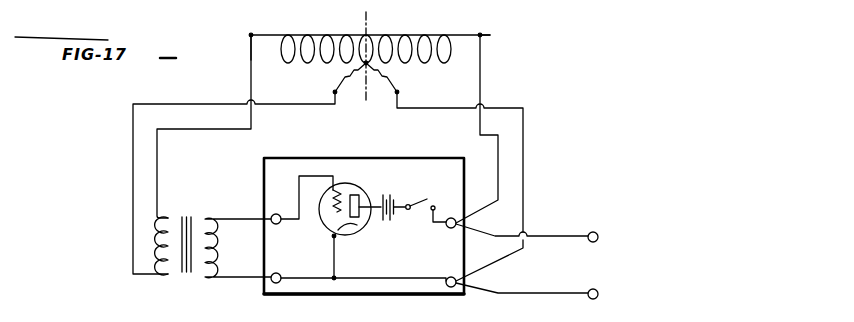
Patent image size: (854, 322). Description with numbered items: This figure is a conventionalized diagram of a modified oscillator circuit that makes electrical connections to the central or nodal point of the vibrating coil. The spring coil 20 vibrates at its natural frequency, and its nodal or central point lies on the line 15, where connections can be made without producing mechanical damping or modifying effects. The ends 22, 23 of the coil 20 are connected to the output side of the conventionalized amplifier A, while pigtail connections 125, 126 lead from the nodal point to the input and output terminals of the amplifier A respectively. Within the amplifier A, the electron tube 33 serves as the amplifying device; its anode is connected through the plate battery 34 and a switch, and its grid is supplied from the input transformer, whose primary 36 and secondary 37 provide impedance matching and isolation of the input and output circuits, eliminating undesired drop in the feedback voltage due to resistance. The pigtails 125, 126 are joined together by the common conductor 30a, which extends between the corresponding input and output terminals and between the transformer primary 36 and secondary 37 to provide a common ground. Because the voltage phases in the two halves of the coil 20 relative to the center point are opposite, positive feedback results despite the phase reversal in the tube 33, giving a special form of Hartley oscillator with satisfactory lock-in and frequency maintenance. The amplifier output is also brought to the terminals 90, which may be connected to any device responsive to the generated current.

The nodal line 15 is at (366, 62).
The spring coil 20 is at (420, 42).
The coil end 22 is at (242, 37).
The coil end 23 is at (488, 40).
The pigtail connection 125 is at (345, 78).
The pigtail connection 126 is at (387, 80).
The electron tube 33 is at (347, 190).
The plate battery 34 is at (402, 219).
The common conductor 30a is at (424, 270).
The amplifier A is at (357, 303).
The transformer primary 36 is at (167, 258).
The transformer secondary 37 is at (235, 258).
The output terminals 90 is at (595, 265).